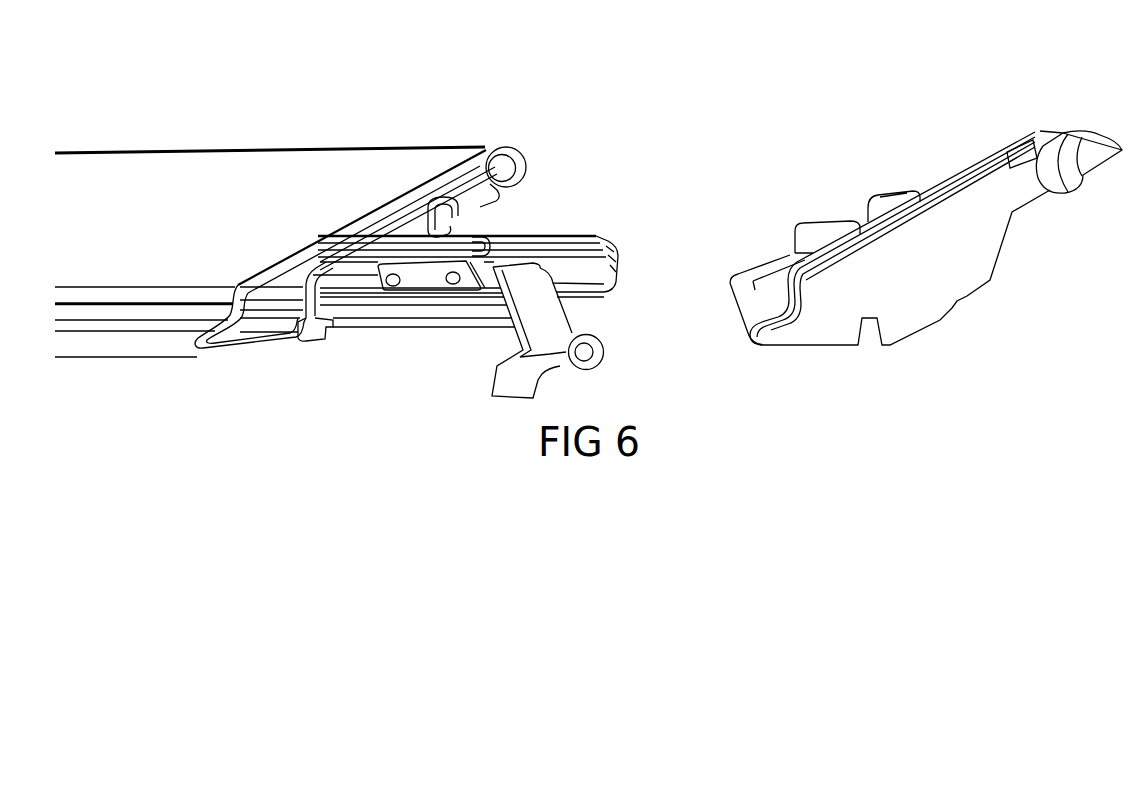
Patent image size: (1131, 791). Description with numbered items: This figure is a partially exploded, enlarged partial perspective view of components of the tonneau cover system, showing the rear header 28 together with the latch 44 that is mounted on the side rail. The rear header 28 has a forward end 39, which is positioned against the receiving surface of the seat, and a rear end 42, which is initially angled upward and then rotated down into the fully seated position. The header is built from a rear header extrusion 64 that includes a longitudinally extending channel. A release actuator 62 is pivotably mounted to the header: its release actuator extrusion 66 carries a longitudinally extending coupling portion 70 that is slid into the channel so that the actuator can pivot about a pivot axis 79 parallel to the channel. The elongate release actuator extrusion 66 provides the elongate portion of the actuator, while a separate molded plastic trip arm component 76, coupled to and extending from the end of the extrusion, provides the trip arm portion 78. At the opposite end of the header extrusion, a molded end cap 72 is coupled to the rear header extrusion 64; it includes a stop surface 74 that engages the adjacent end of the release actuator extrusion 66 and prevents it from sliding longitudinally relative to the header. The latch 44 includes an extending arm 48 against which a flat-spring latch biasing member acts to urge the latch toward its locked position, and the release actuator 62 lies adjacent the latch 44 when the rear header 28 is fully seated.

The rear header 28 is at (207, 125).
The rear header extrusion 64 is at (284, 200).
The rear end 42 is at (527, 163).
The pivot axis 79 is at (548, 245).
The coupling portion 70 is at (488, 235).
The trip arm portion 78 is at (594, 260).
The molded plastic trip arm component 76 is at (420, 293).
The release actuator 62 is at (450, 345).
The release actuator extrusion 66 is at (372, 315).
The forward end 39 is at (188, 347).
The extending arm 48 is at (543, 370).
The latch 44 is at (627, 339).
The stop surface 74 is at (793, 238).
The molded end cap 72 is at (953, 257).